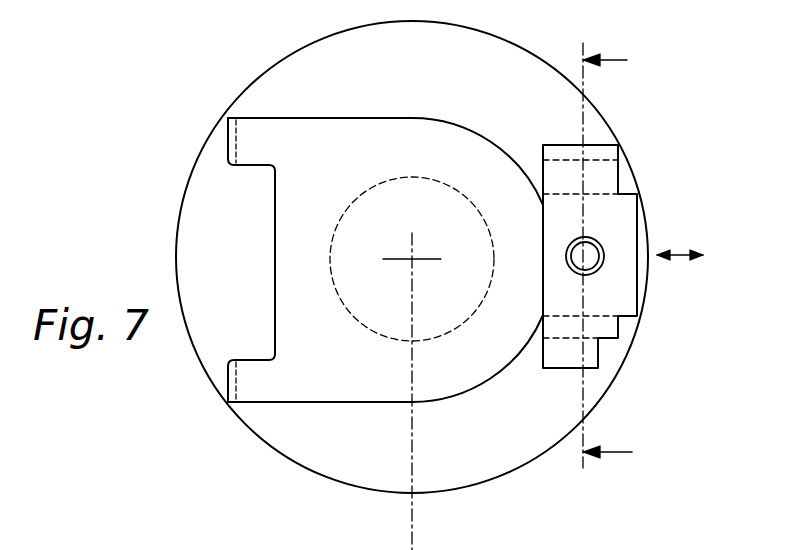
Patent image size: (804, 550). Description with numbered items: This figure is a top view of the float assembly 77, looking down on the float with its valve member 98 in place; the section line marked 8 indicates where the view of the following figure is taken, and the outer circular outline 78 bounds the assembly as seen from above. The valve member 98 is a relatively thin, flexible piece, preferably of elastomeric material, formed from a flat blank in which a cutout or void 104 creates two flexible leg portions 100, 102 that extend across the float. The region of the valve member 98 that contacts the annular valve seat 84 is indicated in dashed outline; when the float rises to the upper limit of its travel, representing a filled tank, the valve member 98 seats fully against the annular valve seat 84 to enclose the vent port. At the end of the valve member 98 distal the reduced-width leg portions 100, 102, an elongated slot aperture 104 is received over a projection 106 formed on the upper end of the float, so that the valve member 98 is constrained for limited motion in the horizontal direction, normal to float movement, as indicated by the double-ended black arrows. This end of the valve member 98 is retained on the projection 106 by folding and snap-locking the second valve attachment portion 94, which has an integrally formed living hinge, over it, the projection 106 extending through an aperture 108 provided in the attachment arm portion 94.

The float assembly 77 is at (660, 84).
The circular base plate 78 is at (485, 32).
The annular valve seat 84 is at (441, 177).
The second valve attachment portion 94 is at (618, 173).
The valve member 98 is at (324, 118).
The flexible leg portion 100 is at (228, 142).
The flexible leg portion 102 is at (228, 384).
The void 104 is at (275, 260).
The projection 106 is at (598, 247).
The aperture 108 is at (604, 263).
The section line 8- 8 is at (607, 257).